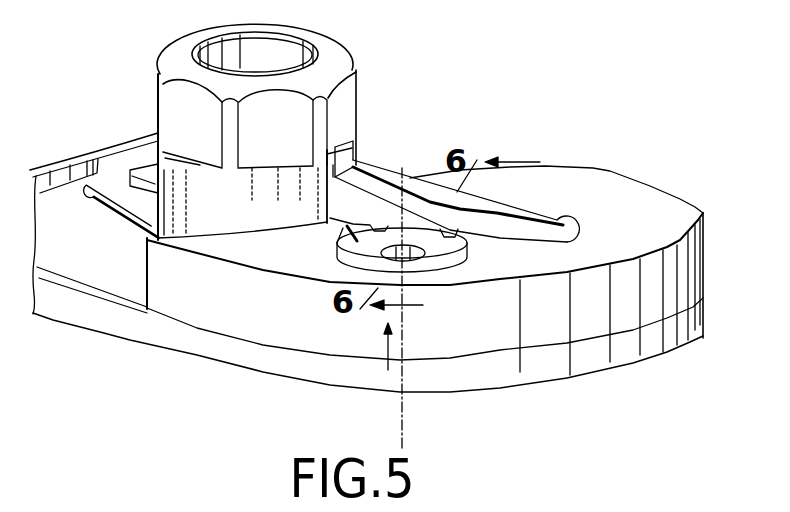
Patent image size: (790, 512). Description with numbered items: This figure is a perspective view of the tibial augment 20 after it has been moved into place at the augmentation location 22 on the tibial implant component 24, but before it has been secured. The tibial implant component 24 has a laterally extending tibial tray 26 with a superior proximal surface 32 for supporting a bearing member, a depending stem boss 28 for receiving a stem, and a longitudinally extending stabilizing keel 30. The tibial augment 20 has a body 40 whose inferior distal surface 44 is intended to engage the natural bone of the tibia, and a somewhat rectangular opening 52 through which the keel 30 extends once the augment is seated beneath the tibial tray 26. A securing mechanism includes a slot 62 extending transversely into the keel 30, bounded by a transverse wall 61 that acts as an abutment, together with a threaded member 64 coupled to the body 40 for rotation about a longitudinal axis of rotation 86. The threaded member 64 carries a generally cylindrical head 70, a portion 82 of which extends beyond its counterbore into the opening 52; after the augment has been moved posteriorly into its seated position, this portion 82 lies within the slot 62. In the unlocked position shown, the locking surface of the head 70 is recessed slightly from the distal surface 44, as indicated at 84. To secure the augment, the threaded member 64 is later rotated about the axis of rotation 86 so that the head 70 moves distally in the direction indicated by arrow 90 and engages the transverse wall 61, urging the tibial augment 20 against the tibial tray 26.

The tibial augment 20 is at (405, 298).
The augmentation location 22 is at (700, 295).
The tibial implant component 24 is at (641, 362).
The tibial tray 26 is at (578, 353).
The stem boss 28 is at (336, 63).
The stabilizing keel 30 is at (413, 180).
The proximal surface 32 is at (477, 392).
The body 40 is at (193, 310).
The distal surface 44 is at (652, 213).
The opening 52 is at (540, 216).
The transverse wall 61 is at (342, 258).
The slot 62 is at (138, 188).
The threaded member 64 is at (350, 232).
The head 70 is at (445, 253).
The portion 82 is at (405, 226).
The recess 84 is at (343, 229).
The axis of rotation 86 is at (403, 337).
The arrow 90 is at (387, 368).